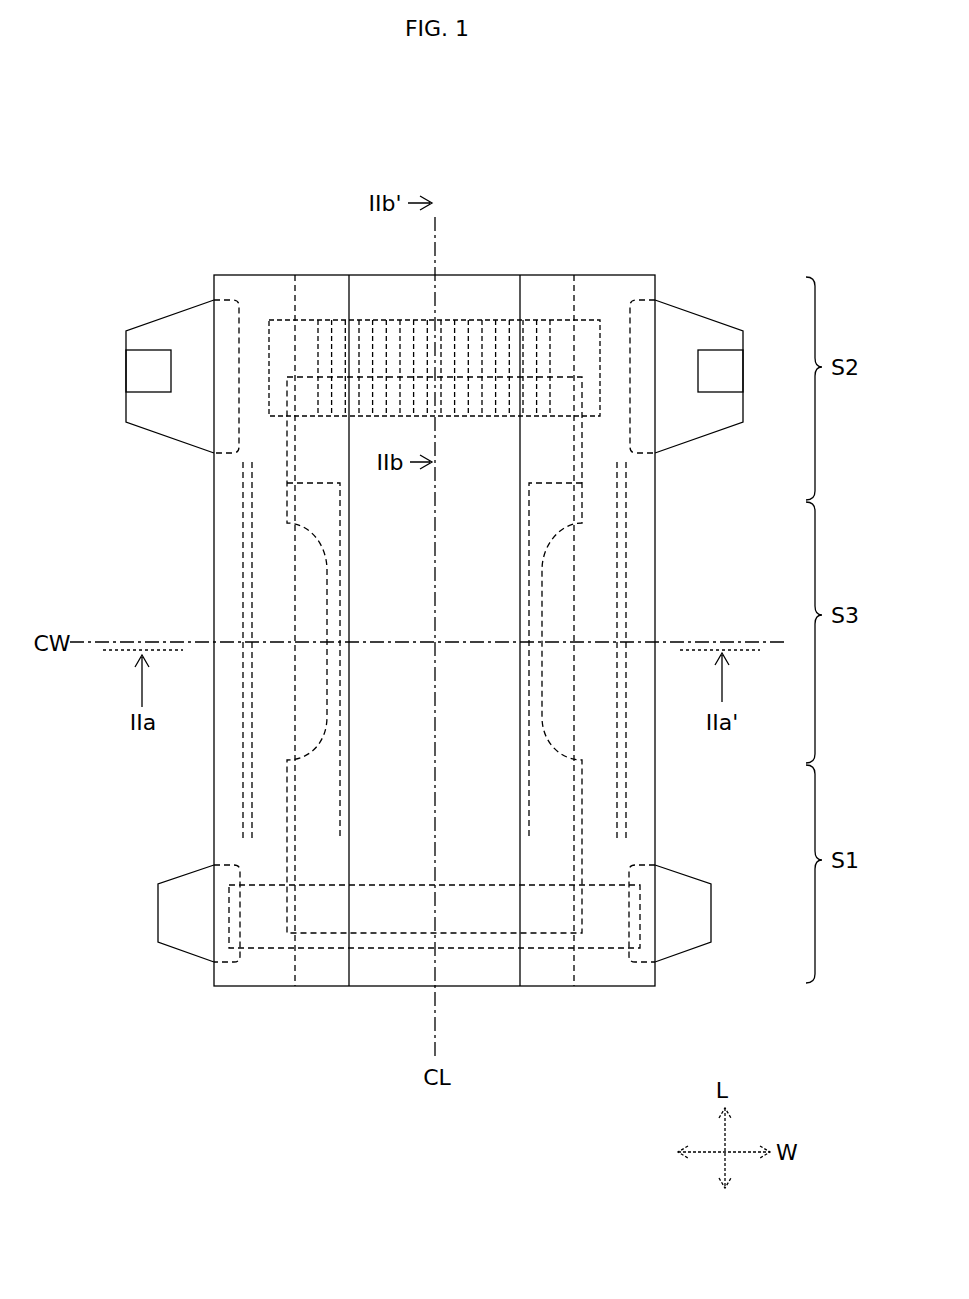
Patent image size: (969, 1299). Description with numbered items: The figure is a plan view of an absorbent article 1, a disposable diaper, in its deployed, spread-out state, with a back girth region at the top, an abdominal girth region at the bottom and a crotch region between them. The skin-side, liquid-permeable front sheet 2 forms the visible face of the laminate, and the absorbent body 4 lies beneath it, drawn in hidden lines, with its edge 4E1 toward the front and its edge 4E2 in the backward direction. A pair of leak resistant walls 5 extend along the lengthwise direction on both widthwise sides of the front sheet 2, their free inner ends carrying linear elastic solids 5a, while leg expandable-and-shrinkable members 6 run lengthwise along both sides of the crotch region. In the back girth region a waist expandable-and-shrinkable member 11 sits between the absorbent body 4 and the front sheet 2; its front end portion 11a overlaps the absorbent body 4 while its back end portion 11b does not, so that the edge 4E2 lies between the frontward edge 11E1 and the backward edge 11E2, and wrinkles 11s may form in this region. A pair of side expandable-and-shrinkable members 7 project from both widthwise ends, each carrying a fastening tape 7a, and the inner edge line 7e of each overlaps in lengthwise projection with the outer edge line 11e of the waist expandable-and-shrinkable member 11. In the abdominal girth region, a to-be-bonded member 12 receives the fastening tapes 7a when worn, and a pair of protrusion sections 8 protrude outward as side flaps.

The absorbent article 1 is at (76, 176).
The front sheet 2 is at (488, 285).
The absorbent body 4 is at (490, 935).
The edge of absorbent body 4E1 is at (323, 935).
The edge in the backward direction of the absorbent body 4E2 is at (330, 375).
The leak resistant wall 5 is at (295, 282).
The linear elastic solid 5a is at (290, 487).
The leg expandable-and-shrinkable member 6 is at (243, 577).
The side expandable-and-shrinkable member 7 is at (171, 330).
The fastening tape 7a is at (143, 350).
The edge line of side expandable-and-shrinkable member 7e is at (247, 318).
The protrusion section 8 is at (168, 948).
The waist expandable-and-shrinkable member 11 is at (560, 130).
The front end portion 11a is at (502, 397).
The back end portion 11b is at (470, 344).
The edge line of waist expandable-and-shrinkable member 11e is at (267, 355).
The wrinkles 11s is at (450, 400).
The edge in the frontward direction of the waist expandable-and-shrinkable member 11E1 is at (372, 416).
The edge in the backward direction of the waist expandable-and-shrinkable member 11E2 is at (382, 318).
The to-be-bonded member 12 is at (370, 950).